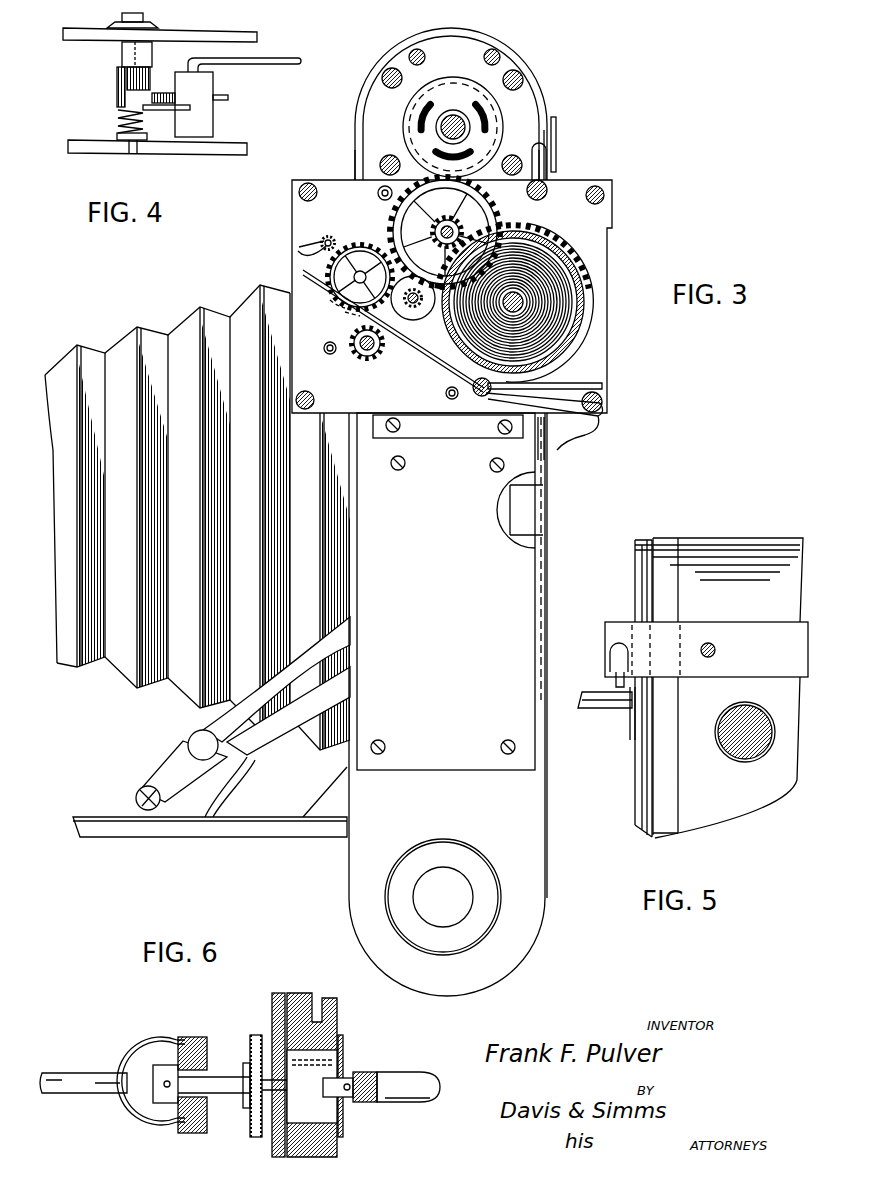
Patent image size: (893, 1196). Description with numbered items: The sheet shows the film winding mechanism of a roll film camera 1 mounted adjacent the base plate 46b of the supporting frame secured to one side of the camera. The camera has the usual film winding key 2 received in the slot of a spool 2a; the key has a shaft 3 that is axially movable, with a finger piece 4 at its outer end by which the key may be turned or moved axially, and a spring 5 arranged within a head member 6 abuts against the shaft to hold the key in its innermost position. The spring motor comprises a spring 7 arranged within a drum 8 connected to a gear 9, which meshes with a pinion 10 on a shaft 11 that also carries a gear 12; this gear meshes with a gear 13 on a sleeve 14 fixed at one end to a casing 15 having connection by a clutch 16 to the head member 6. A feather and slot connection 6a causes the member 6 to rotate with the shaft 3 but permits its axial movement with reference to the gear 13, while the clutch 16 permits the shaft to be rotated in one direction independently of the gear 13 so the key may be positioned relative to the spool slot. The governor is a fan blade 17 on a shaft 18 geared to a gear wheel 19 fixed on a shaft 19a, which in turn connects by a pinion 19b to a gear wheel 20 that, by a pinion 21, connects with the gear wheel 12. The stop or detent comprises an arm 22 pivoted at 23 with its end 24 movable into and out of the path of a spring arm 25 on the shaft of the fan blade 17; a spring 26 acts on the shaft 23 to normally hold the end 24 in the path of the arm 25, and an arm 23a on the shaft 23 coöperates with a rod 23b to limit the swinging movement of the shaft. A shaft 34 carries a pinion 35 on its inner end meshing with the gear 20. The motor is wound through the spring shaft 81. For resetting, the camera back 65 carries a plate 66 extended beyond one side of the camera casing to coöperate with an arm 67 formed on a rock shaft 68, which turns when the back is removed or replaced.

In FIG. 3, the roll film camera 1 is at (528, 822).
In FIG. 5, the roll film camera 1 is at (664, 830).
In FIG. 6, the roll film camera 1 is at (317, 997).
In FIG. 6, the film winding key 2 is at (348, 1076).
In FIG. 6, the spool 2a is at (412, 1083).
In FIG. 3, the key shaft 3 is at (453, 112).
In FIG. 6, the key shaft 3 is at (313, 1092).
In FIG. 6, the finger piece 4 is at (85, 1090).
In FIG. 6, the spring 5 is at (165, 1097).
In FIG. 6, the head member 6 is at (173, 1060).
In FIG. 6, the feather and slot connection 6a is at (133, 1073).
In FIG. 3, the spring 7 is at (563, 265).
In FIG. 3, the drum 8 is at (580, 280).
In FIG. 3, the spring shaft 81 is at (525, 304).
In FIG. 3, the gear 9 is at (547, 227).
In FIG. 3, the pinion 10 is at (436, 226).
In FIG. 3, the shaft 11 is at (445, 232).
In FIG. 3, the gear 12 is at (408, 192).
In FIG. 3, the gear 13 is at (487, 95).
In FIG. 6, the gear 13 is at (257, 1035).
In FIG. 3, the sleeve 14 is at (462, 112).
In FIG. 6, the sleeve 14 is at (248, 1108).
In FIG. 6, the casing 15 is at (205, 1133).
In FIG. 6, the clutch 16 is at (197, 1037).
In FIG. 3, the fan blade 17 is at (326, 238).
In FIG. 4, the fan blade 17 is at (122, 58).
In FIG. 3, the shaft 18 is at (368, 192).
In FIG. 4, the shaft 18 is at (118, 118).
In FIG. 3, the gear wheel 19 is at (362, 255).
In FIG. 4, the gear wheel 19 is at (165, 93).
In FIG. 3, the shaft 19a is at (345, 315).
In FIG. 3, the pinion 19b is at (340, 305).
In FIG. 3, the gear wheel 20 is at (413, 322).
In FIG. 3, the pinion 21 is at (440, 340).
In FIG. 3, the stop arm 22 is at (470, 418).
In FIG. 4, the stop arm 22 is at (286, 60).
In FIG. 3, the shaft 23 is at (547, 420).
In FIG. 3, the arm 23a is at (590, 380).
In FIG. 3, the rod 23b is at (604, 398).
In FIG. 3, the end of stop arm 24 is at (303, 272).
In FIG. 4, the end of stop arm 24 is at (205, 118).
In FIG. 3, the spring arm 25 is at (300, 248).
In FIG. 4, the spring arm 25 is at (172, 112).
In FIG. 3, the spring 26 is at (596, 420).
In FIG. 3, the shaft 34 is at (356, 348).
In FIG. 3, the pinion 35 is at (367, 360).
In FIG. 3, the base plate 46b is at (383, 90).
In FIG. 6, the base plate 46b is at (280, 995).
In FIG. 3, the camera back 65 is at (563, 558).
In FIG. 5, the camera back 65 is at (746, 545).
In FIG. 3, the plate 66 is at (557, 127).
In FIG. 5, the plate 66 is at (706, 649).
In FIG. 3, the arm 67 is at (540, 163).
In FIG. 5, the arm 67 is at (610, 655).
In FIG. 3, the rock shaft 68 is at (548, 187).
In FIG. 5, the rock shaft 68 is at (622, 708).